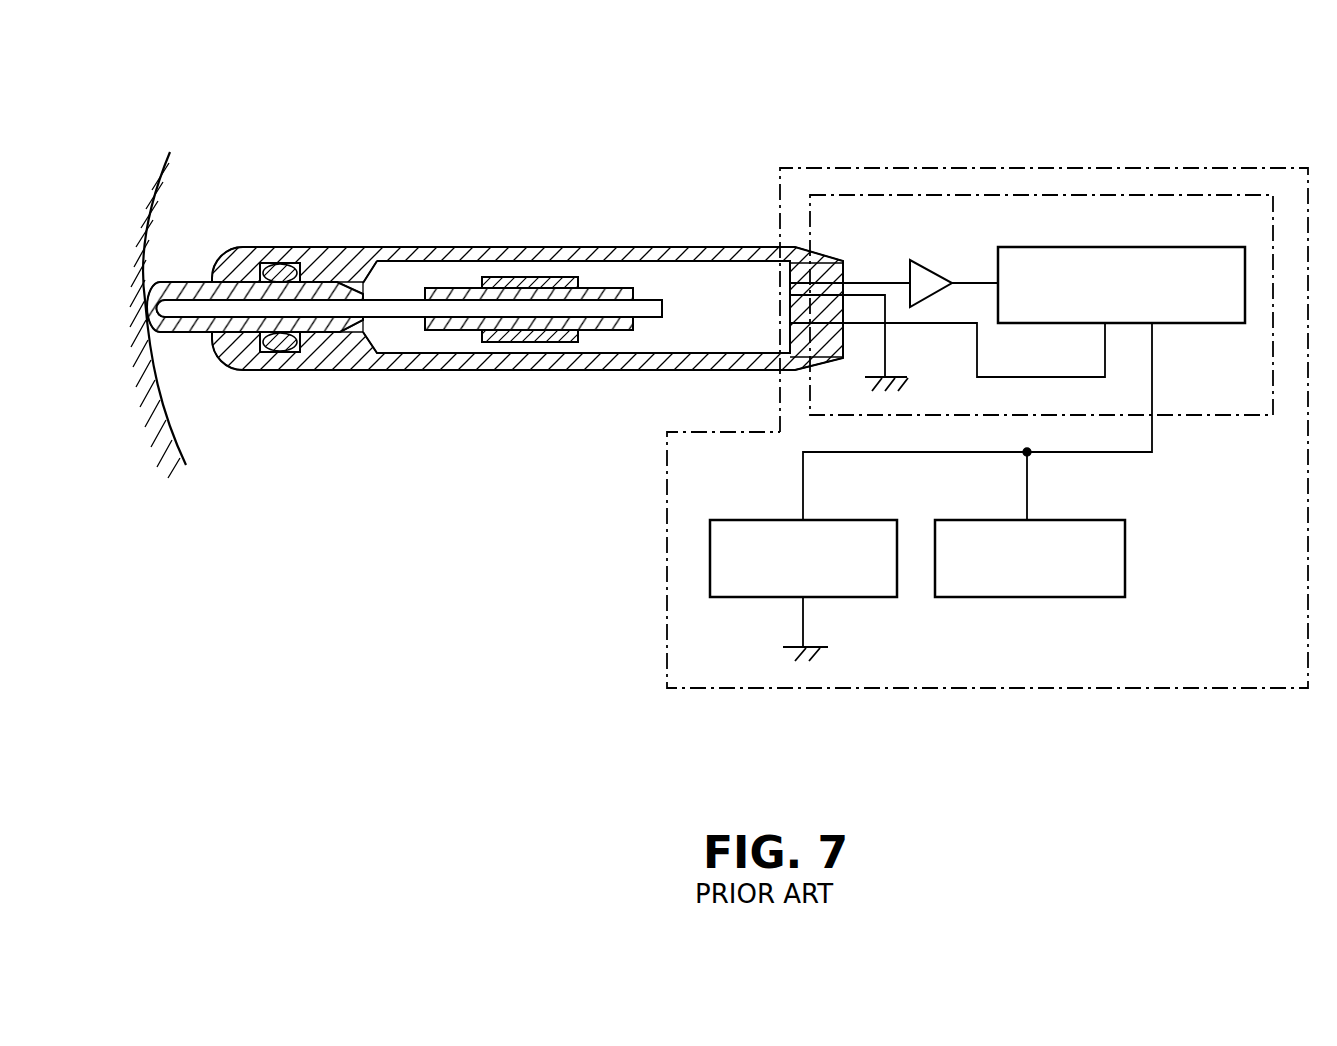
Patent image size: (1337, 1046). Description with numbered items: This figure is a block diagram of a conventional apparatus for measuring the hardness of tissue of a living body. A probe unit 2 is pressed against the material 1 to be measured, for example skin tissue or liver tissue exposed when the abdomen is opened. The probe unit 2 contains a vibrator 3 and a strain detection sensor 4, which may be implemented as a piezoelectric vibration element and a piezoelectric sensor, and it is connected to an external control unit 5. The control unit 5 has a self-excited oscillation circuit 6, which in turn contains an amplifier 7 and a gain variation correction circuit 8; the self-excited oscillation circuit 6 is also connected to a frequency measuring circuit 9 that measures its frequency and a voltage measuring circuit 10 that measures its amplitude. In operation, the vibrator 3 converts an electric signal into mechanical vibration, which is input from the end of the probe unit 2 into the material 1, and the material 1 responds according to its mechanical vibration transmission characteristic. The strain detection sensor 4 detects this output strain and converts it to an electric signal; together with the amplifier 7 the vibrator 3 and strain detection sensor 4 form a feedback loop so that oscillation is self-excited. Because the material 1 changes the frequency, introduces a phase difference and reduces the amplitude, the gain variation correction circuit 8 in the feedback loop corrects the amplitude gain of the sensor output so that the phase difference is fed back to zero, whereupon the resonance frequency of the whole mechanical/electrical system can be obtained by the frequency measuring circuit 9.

The material to be measured 1 is at (170, 212).
The probe unit 2 is at (518, 247).
The vibrator 3 is at (455, 293).
The strain detection sensor 4 is at (527, 343).
The control unit 5 is at (987, 405).
The self-excited oscillation circuit 6 is at (1041, 216).
The amplifier 7 is at (910, 267).
The gain variation correction circuit 8 is at (1190, 247).
The frequency measuring circuit 9 is at (1053, 520).
The voltage measuring circuit 10 is at (755, 520).